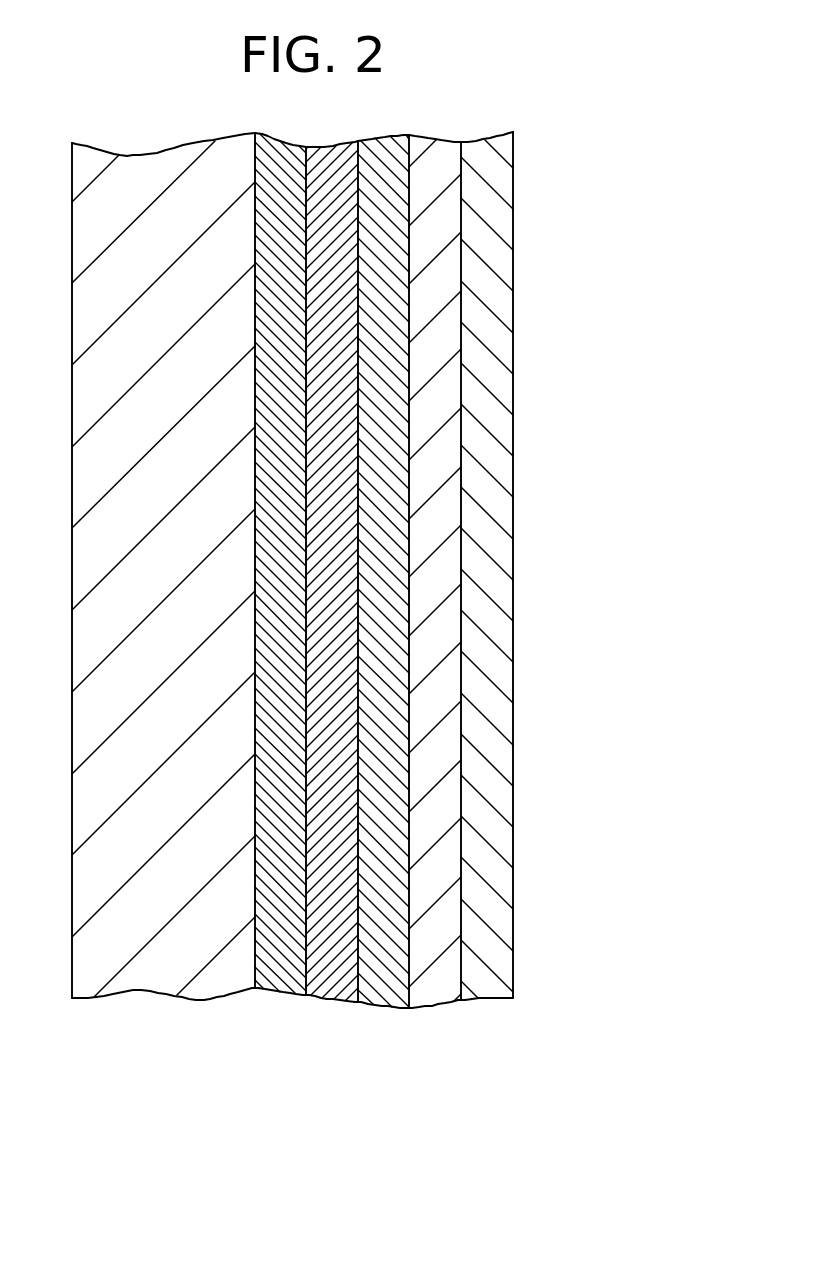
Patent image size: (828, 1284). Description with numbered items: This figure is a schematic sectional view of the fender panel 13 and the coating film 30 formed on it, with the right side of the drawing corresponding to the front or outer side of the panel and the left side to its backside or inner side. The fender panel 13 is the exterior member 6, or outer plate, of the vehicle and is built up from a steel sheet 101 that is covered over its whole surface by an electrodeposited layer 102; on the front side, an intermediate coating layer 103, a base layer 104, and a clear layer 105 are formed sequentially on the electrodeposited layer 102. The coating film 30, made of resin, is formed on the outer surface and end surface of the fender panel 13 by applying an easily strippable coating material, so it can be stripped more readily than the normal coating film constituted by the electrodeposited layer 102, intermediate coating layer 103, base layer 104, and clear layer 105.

The exterior member 6 is at (629, 426).
The fender panel 13 is at (495, 1116).
The coating film 30 is at (480, 488).
The steel sheet 101 is at (175, 965).
The electrodeposited layer 102 is at (278, 967).
The intermediate coating layer 103 is at (335, 965).
The base layer 104 is at (387, 967).
The clear layer 105 is at (438, 965).